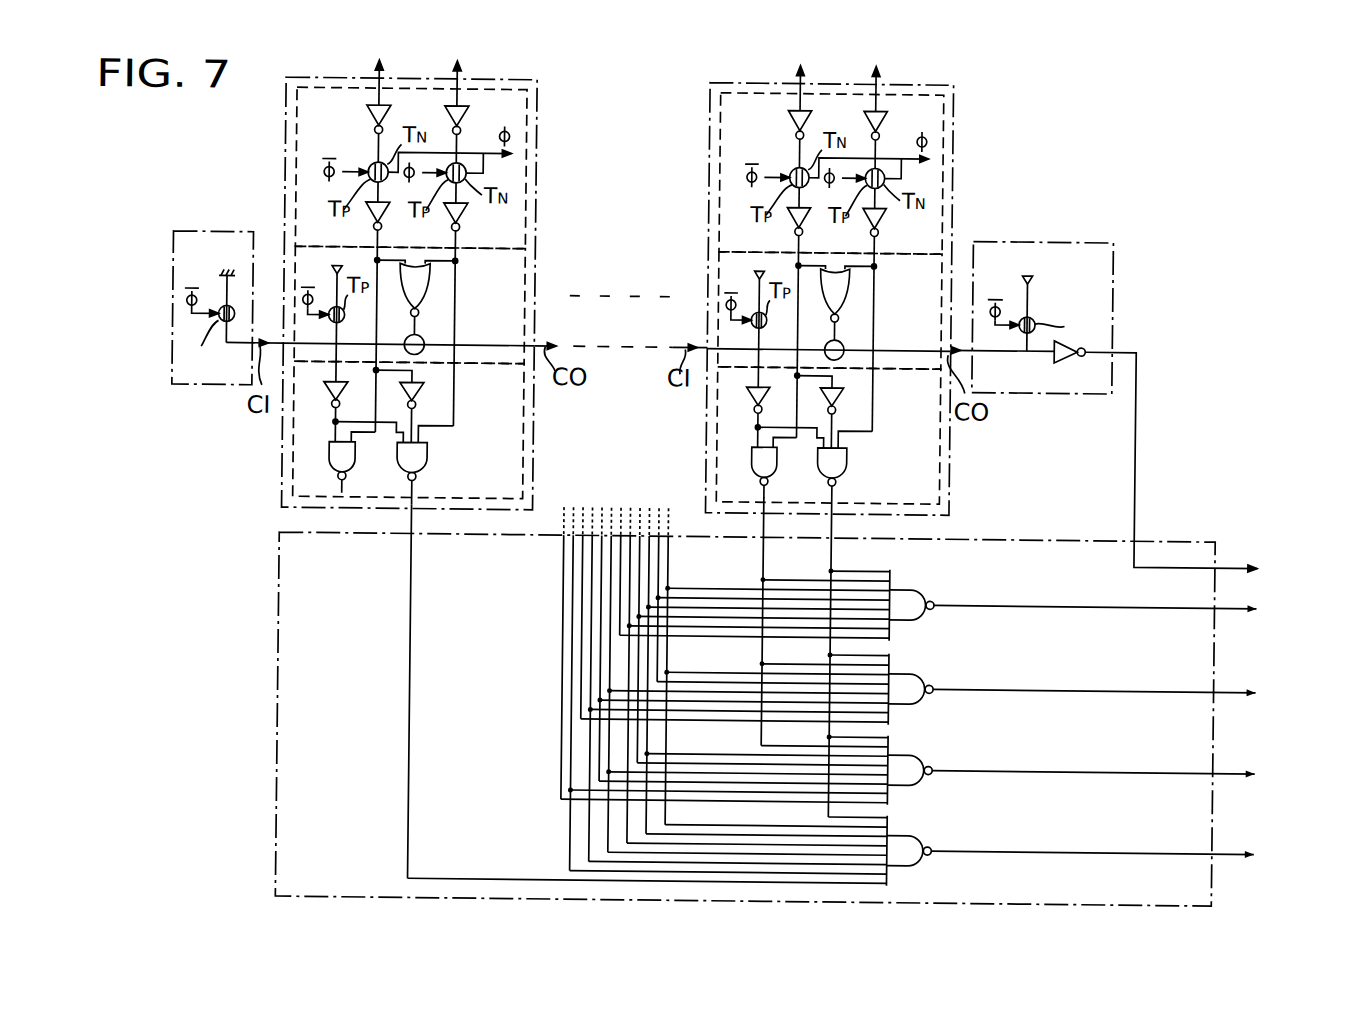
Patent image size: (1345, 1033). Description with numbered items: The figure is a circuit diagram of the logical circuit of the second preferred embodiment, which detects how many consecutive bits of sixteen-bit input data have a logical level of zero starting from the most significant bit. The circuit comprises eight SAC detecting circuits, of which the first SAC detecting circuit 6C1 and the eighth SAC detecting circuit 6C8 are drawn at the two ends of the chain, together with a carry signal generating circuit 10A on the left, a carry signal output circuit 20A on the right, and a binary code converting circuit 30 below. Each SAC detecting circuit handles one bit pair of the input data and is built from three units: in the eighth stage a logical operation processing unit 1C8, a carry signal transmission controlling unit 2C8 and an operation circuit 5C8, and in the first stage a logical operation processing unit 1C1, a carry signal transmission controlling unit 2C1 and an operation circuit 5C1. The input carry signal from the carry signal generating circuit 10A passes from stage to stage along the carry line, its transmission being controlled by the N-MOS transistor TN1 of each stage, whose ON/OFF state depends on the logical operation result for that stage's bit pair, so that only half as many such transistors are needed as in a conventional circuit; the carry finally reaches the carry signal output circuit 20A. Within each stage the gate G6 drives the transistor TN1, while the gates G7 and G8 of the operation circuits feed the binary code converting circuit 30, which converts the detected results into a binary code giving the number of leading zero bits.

The logical operation processing unit 1C8 is at (528, 101).
The SAC detecting circuit 6C8 is at (287, 163).
The carry signal transmission controlling unit 2C8 is at (528, 263).
The operation circuit 5C8 is at (528, 411).
The carry signal generating circuit 10A is at (192, 381).
The logical operation processing unit 1C1 is at (938, 92).
The SAC detecting circuit 6C1 is at (954, 125).
The carry signal transmission controlling unit 2C1 is at (918, 246).
The operation circuit 5C1 is at (954, 450).
The carry signal output circuit 20A is at (1116, 258).
The binary code converting circuit 30 is at (1160, 528).
The NOR gate G6 is at (415, 297).
The NAND gate G7 is at (325, 467).
The NAND gate G8 is at (438, 473).
The N-MOS transistor TN1 is at (431, 334).